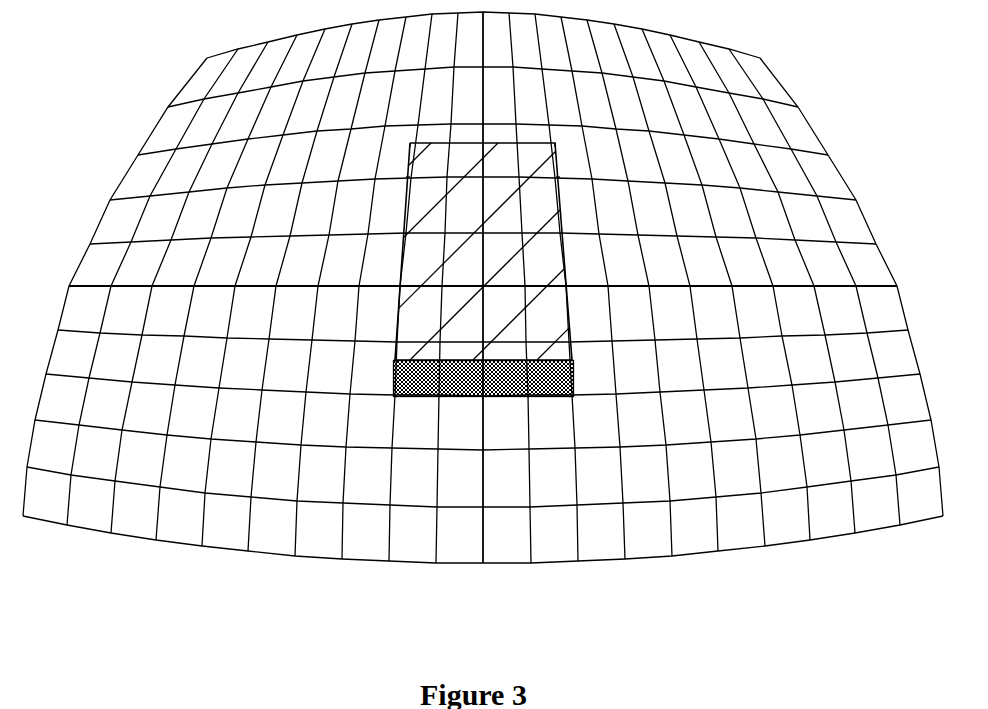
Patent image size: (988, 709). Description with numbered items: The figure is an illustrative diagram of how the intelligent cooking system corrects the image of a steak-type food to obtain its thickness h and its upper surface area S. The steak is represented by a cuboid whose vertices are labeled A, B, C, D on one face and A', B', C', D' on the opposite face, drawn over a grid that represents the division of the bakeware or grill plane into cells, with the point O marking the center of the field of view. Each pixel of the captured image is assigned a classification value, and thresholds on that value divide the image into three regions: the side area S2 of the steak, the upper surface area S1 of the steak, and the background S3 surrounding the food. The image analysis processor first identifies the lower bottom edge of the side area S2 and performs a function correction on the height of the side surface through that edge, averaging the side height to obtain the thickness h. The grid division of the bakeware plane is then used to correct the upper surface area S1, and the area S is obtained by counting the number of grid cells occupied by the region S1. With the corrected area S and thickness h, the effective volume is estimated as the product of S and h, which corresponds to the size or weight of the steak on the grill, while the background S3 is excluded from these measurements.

The upper surface area S1 is at (484, 378).
The side area S2 is at (483, 251).
The background S3 is at (483, 287).
The center of the field of view O is at (488, 293).
The cuboid vertex A is at (387, 401).
The cuboid vertex A' is at (386, 369).
The cuboid vertex B is at (401, 176).
The cuboid vertex B' is at (400, 142).
The cuboid vertex C is at (563, 179).
The cuboid vertex C' is at (564, 146).
The cuboid vertex D is at (579, 398).
The cuboid vertex D' is at (580, 364).